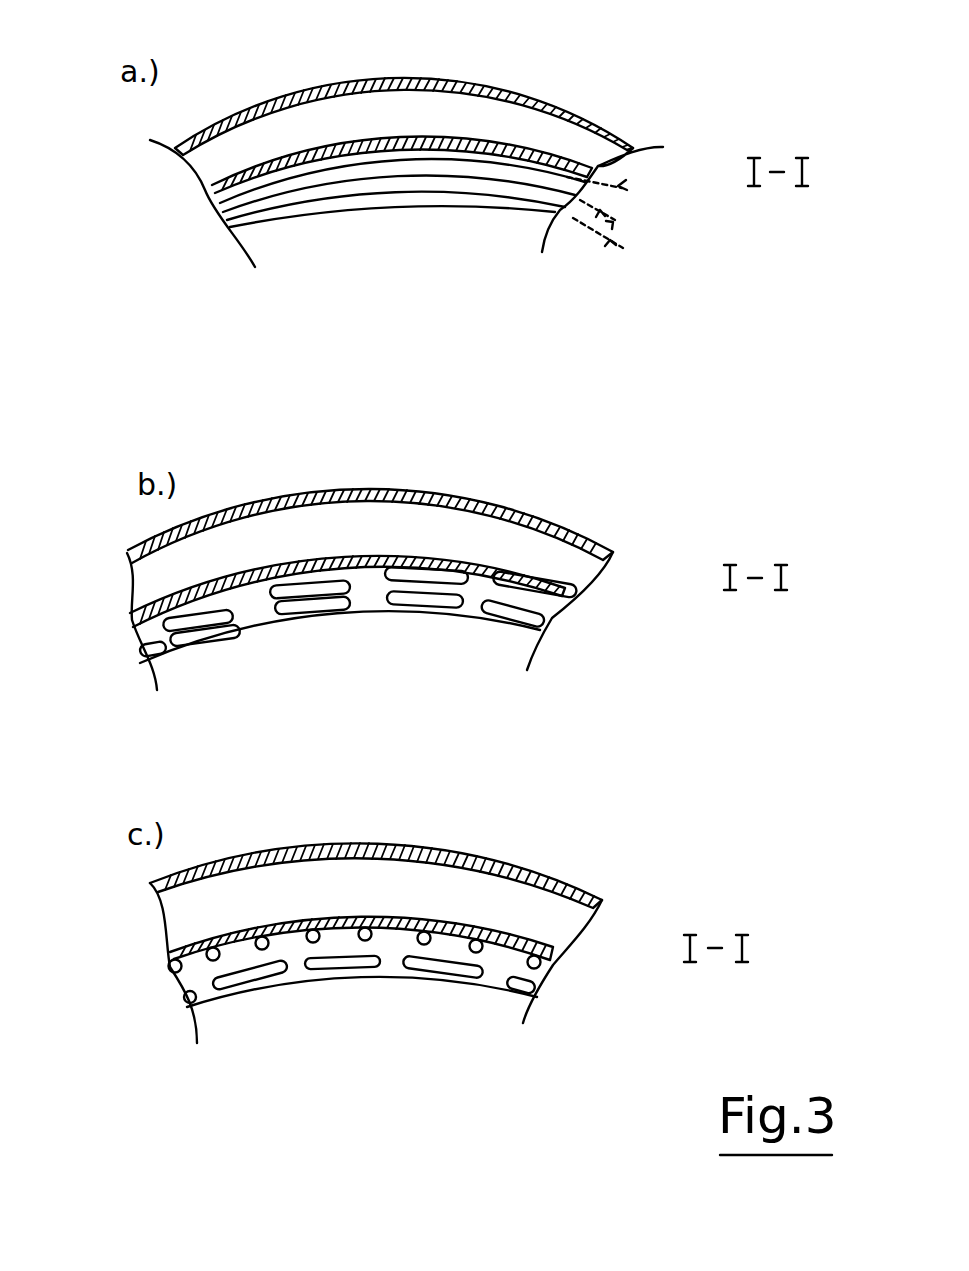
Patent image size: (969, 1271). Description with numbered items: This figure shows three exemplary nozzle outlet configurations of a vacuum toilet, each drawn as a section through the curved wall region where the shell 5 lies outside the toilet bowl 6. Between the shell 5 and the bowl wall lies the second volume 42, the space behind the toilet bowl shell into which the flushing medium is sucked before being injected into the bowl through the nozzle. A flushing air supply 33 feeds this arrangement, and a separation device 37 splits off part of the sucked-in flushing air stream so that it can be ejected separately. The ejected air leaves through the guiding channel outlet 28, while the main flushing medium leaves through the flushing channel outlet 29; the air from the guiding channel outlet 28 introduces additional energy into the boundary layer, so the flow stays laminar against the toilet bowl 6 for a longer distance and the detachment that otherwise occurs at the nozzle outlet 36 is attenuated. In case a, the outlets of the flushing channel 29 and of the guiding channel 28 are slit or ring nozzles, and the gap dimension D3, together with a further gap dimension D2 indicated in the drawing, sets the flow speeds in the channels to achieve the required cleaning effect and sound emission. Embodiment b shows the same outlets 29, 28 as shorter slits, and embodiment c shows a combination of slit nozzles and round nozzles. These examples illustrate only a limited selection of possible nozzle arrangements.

The shell 5 is at (489, 82).
The second volume 42 is at (386, 503).
The flushing channel outlet 29 is at (603, 193).
The guiding channel outlet 28 is at (590, 223).
The nozzle outlet 36 is at (533, 213).
The flushing air supply 33 is at (213, 153).
The toilet bowl 6 is at (232, 207).
The separation device 37 is at (213, 217).
The thickness D2 is at (633, 177).
The gap dimension D3 is at (630, 227).